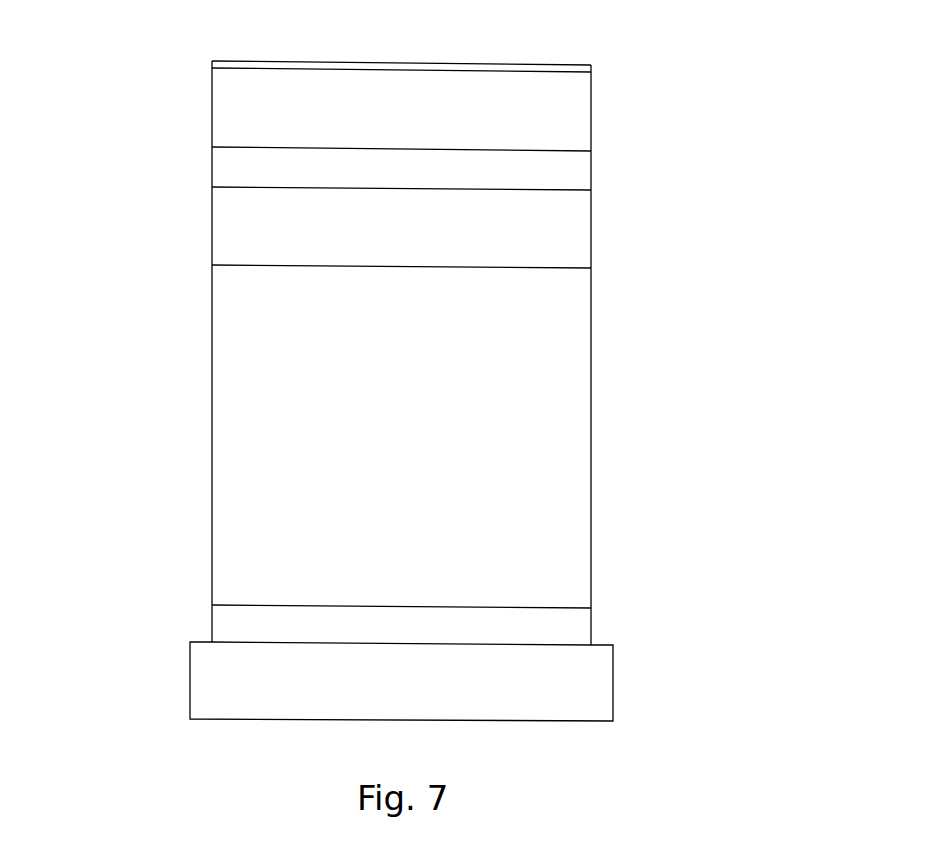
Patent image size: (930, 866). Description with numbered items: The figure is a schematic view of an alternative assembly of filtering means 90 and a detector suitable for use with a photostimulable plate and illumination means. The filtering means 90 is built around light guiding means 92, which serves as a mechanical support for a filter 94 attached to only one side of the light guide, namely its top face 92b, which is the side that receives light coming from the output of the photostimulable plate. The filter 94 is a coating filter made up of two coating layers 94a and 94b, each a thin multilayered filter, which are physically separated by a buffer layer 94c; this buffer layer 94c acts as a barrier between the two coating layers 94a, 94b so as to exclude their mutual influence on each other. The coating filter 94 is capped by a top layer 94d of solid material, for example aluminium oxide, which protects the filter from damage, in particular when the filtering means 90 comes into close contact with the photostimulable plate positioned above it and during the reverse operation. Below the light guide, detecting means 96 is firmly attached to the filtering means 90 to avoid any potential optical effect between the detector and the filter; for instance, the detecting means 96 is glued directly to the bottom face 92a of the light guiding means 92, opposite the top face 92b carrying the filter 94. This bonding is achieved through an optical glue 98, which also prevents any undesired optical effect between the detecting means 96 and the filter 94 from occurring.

The filtering means 90 is at (120, 63).
The light guiding means 92 is at (614, 433).
The bottom face 92a is at (222, 609).
The top face 92b is at (218, 262).
The filter 94 is at (196, 166).
The coating layer 94a is at (583, 107).
The coating layer 94b is at (583, 237).
The buffer layer 94c is at (583, 165).
The top layer 94d is at (544, 63).
The detecting means 96 is at (602, 691).
The optical glue 98 is at (575, 627).